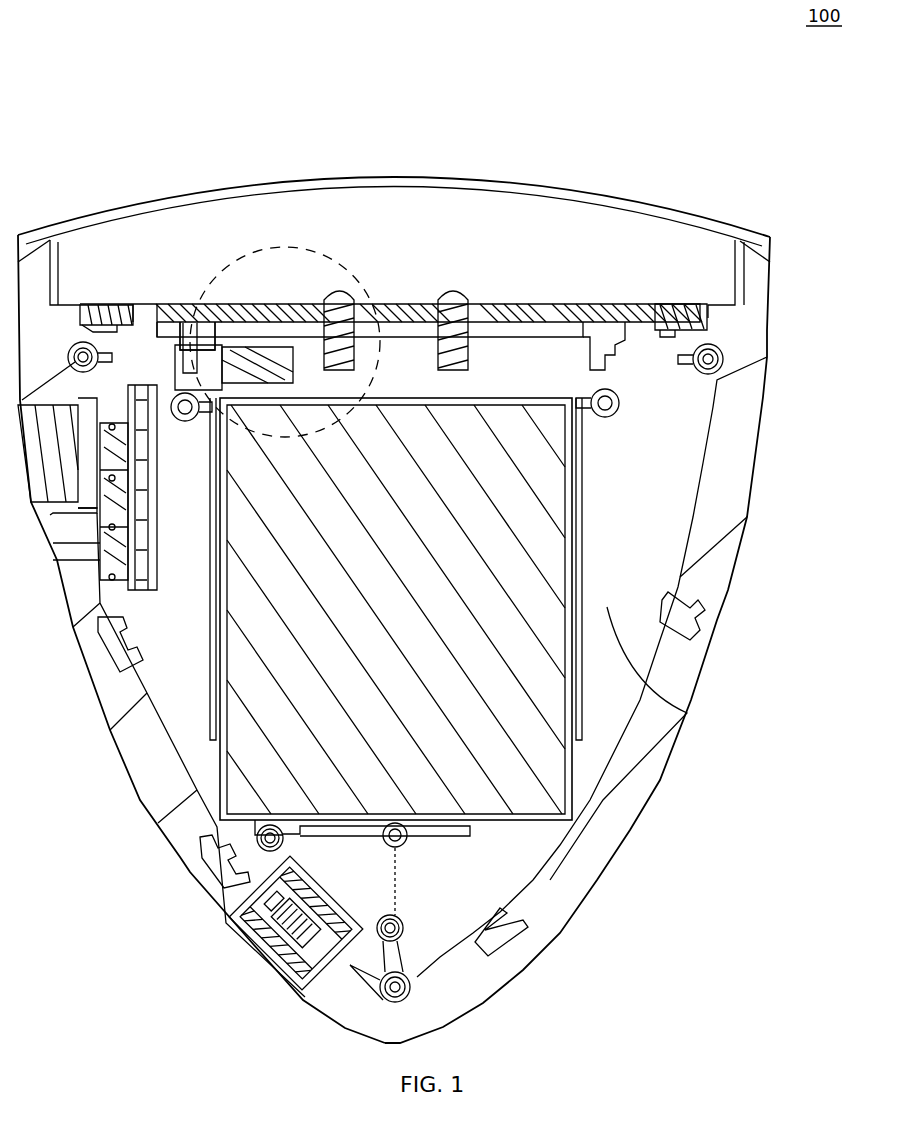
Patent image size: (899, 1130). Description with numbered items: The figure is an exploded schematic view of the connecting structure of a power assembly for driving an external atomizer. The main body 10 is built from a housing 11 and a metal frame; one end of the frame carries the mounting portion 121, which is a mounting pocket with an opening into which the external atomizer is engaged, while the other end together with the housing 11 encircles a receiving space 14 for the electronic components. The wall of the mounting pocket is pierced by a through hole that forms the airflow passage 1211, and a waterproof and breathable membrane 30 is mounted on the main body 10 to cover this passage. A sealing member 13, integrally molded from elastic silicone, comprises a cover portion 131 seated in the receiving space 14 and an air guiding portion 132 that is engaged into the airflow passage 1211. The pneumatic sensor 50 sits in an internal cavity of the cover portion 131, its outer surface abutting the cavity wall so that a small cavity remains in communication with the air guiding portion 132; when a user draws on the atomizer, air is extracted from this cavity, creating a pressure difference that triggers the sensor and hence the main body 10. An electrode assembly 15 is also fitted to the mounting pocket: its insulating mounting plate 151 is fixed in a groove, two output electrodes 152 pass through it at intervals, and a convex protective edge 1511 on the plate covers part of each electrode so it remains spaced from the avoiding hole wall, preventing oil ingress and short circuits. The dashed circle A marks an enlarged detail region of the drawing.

The main body 10 is at (758, 262).
The housing 11 is at (687, 713).
The mounting portion 121 is at (622, 240).
The sealing member 13 is at (92, 97).
The cover portion 131 is at (201, 320).
The air guiding portion 132 is at (243, 300).
The receiving space 14 is at (641, 525).
The electrode assembly 15 is at (538, 67).
The mounting plate 151 is at (400, 304).
The protective edge 1511 is at (494, 322).
The output electrode 152 is at (340, 290).
The waterproof and breathable membrane 30 is at (293, 347).
The airflow passage 1211 is at (260, 345).
The pneumatic sensor 50 is at (183, 350).
The detail region A is at (343, 280).